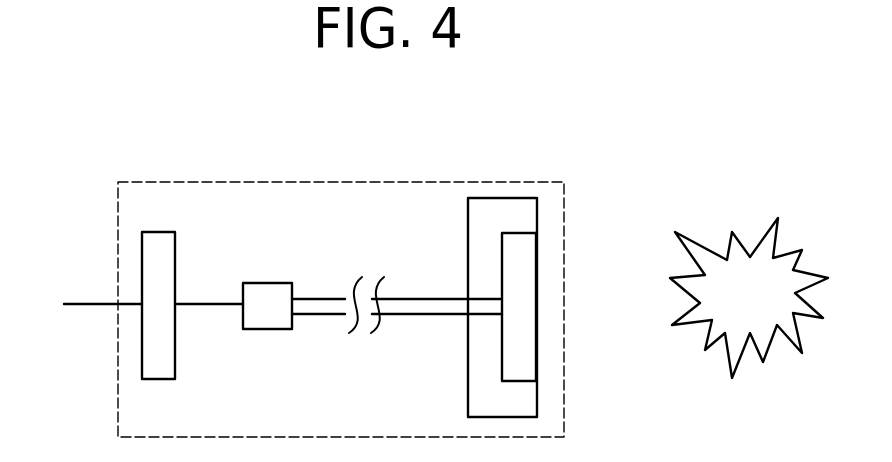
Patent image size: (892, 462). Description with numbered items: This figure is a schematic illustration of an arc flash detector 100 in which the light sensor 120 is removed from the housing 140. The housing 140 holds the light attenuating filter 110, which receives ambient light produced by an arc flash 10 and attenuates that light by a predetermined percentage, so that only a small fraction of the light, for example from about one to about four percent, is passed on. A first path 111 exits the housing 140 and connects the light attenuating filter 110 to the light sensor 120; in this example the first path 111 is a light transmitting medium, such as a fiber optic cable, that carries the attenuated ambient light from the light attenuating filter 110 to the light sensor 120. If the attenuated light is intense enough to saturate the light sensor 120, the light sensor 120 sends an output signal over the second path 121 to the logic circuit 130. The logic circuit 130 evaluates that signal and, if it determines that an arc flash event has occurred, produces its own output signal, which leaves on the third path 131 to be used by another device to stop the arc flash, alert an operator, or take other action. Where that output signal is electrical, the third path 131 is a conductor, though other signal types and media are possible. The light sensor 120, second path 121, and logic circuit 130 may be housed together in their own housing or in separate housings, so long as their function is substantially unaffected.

The arc flash detector 100 is at (582, 163).
The light attenuating filter 110 is at (537, 372).
The first path 111 is at (423, 298).
The light sensor 120 is at (270, 283).
The second path 121 is at (210, 303).
The logic circuit 130 is at (158, 232).
The third path 131 is at (103, 305).
The housing 140 is at (475, 198).
The arc flash 10 is at (790, 252).